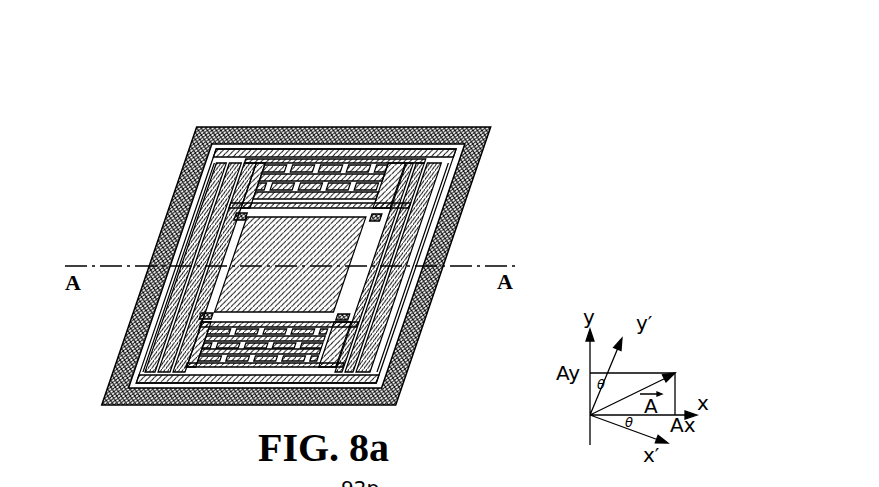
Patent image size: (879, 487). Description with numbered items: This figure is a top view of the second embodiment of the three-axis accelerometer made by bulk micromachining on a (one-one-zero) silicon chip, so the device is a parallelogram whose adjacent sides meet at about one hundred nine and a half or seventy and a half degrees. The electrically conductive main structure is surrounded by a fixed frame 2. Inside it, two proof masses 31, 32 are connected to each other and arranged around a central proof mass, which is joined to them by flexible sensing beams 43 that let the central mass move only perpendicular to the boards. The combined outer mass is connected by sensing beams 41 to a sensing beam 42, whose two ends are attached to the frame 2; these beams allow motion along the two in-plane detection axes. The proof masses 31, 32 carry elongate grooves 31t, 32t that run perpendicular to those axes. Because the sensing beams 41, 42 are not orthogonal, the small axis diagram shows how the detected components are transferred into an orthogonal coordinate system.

The frame 2 is at (462, 225).
The proof mass 31 is at (190, 258).
The elongate groove 31t is at (390, 310).
The proof mass 32 is at (291, 165).
The elongate groove 32t is at (359, 186).
The sensing beam 41 is at (207, 168).
The sensing beam 42 is at (246, 128).
The flexible sensing beam 43 is at (205, 240).